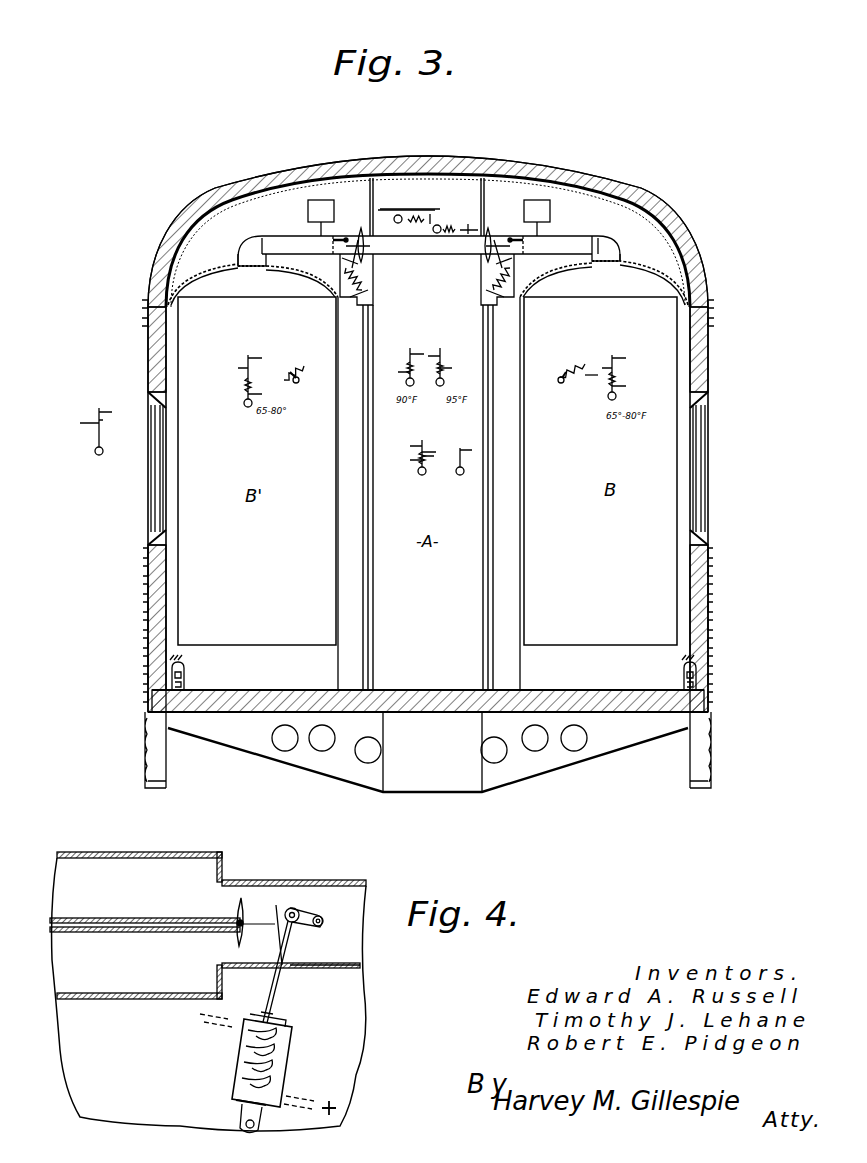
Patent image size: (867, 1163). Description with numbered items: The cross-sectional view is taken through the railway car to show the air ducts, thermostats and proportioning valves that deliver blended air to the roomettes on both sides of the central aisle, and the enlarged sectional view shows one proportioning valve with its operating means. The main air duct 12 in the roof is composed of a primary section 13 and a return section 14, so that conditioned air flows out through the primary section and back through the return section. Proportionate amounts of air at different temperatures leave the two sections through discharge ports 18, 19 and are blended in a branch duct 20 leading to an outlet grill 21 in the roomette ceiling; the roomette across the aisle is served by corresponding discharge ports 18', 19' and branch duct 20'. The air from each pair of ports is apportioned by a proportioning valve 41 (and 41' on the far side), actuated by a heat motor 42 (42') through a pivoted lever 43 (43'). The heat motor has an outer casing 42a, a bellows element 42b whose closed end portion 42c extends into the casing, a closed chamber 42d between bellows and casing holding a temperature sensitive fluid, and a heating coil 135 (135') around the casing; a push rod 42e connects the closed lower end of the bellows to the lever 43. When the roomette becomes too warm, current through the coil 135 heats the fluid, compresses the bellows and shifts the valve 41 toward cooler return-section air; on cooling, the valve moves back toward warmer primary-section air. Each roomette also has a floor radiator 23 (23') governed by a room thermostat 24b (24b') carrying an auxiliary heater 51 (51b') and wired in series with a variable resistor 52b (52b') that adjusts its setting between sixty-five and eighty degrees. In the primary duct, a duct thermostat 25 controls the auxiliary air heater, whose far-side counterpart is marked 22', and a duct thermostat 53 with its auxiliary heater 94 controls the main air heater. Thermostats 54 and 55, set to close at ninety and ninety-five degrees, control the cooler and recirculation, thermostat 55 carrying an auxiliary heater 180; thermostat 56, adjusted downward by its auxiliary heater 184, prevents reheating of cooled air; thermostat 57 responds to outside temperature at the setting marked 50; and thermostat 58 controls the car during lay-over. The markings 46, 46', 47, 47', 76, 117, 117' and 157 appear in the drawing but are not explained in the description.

In FIG. 3, the main air duct 12 is at (423, 173).
In FIG. 3, the primary section 13 is at (460, 208).
In FIG. 4, the primary section 13 is at (76, 868).
In FIG. 3, the return section 14 is at (428, 270).
In FIG. 4, the return section 14 is at (126, 985).
In FIG. 3, the discharge port 18 is at (429, 251).
In FIG. 4, the discharge port 18 is at (145, 906).
In FIG. 3, the discharge port 18' is at (388, 209).
In FIG. 3, the discharge port 19 is at (428, 261).
In FIG. 4, the discharge port 19 is at (205, 947).
In FIG. 3, the discharge port 19' is at (395, 258).
In FIG. 3, the branch duct 20 is at (619, 204).
In FIG. 4, the branch duct 20 is at (298, 909).
In FIG. 3, the branch duct 20' is at (251, 204).
In FIG. 3, the outlet grill 21 is at (610, 263).
In FIG. 3, the auxiliary heater 22' is at (239, 276).
In FIG. 3, the floor radiator 23 is at (724, 672).
In FIG. 3, the floor radiator 23' is at (138, 672).
In FIG. 3, the room thermostat 24b is at (591, 403).
In FIG. 3, the room thermostat 24b' is at (227, 415).
In FIG. 3, the duct thermostat 25 is at (412, 205).
In FIG. 3, the proportioning valve 41 is at (504, 226).
In FIG. 4, the proportioning valve 41 is at (256, 896).
In FIG. 3, the proportioning valve 41' is at (348, 237).
In FIG. 3, the heat motor 42 is at (480, 272).
In FIG. 4, the heat motor 42 is at (268, 1068).
In FIG. 3, the heat motor 42' is at (376, 272).
In FIG. 4, the outer casing 42a is at (236, 1100).
In FIG. 4, the bellows element 42b is at (208, 1038).
In FIG. 4, the closed end portion 42c is at (194, 1085).
In FIG. 4, the closed chamber 42d is at (315, 1068).
In FIG. 4, the push rod 42e is at (280, 990).
In FIG. 3, the pivoted lever 43 is at (536, 243).
In FIG. 4, the pivoted lever 43 is at (293, 938).
In FIG. 3, the pivoted lever 43' is at (315, 243).
In FIG. 3, the damper motor 46 is at (550, 218).
In FIG. 3, the damper motor 46' is at (321, 218).
In FIG. 3, the headliner 47 is at (604, 283).
In FIG. 3, the headliner 47' is at (253, 284).
In FIG. 3, the outside temperature setting 50 is at (97, 472).
In FIG. 3, the auxiliary heater 51 is at (618, 379).
In FIG. 3, the auxiliary heater 51b' is at (227, 377).
In FIG. 3, the variable resistor 52b is at (585, 356).
In FIG. 3, the variable resistor 52b' is at (297, 361).
In FIG. 3, the duct thermostat 53 is at (433, 234).
In FIG. 3, the thermostat 54 is at (406, 381).
In FIG. 3, the thermostat 55 is at (444, 383).
In FIG. 3, the thermostat 56 is at (418, 471).
In FIG. 3, the outside thermostat 57 is at (95, 450).
In FIG. 3, the thermostat 58 is at (464, 471).
In FIG. 3, the thermostat 76 is at (340, 232).
In FIG. 3, the auxiliary heater 94 is at (438, 224).
In FIG. 3, the resistance heater 117 is at (548, 391).
In FIG. 3, the resistance heater 117' is at (280, 392).
In FIG. 3, the heating coil 135 is at (469, 305).
In FIG. 4, the heating coil 135 is at (208, 1067).
In FIG. 3, the heating coil 135' is at (386, 300).
In FIG. 3, the thermostat 157 is at (406, 362).
In FIG. 3, the auxiliary electrical heater 180 is at (446, 364).
In FIG. 3, the electrical auxiliary heater 184 is at (424, 446).